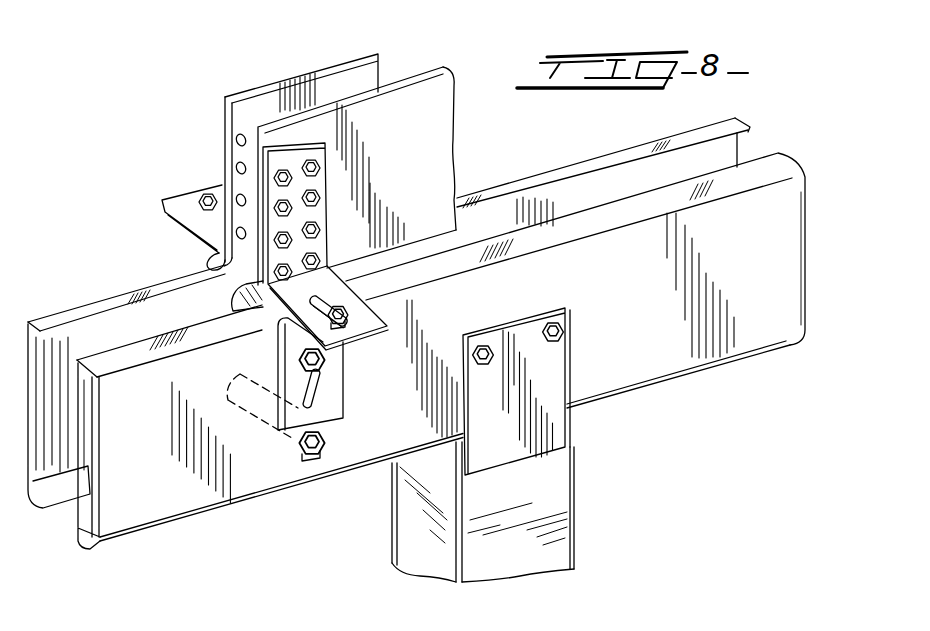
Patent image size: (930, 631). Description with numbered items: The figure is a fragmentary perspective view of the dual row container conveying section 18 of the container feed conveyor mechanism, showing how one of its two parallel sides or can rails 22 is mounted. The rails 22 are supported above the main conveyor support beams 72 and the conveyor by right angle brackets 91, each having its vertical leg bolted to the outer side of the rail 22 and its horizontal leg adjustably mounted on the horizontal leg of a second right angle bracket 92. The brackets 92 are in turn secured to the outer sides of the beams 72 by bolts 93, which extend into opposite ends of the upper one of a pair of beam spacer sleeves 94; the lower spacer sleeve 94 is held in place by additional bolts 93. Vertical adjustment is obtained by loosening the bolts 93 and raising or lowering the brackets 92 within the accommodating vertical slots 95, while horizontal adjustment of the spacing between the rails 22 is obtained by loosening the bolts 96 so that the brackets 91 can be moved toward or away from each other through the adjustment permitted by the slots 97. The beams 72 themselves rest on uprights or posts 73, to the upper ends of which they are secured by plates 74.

The dual row container conveying section 18 is at (162, 112).
The rail 22 is at (283, 92).
The main conveyor support beam 72 is at (72, 309).
The upright or post 73 is at (577, 525).
The plate 74 is at (570, 358).
The right angle bracket 91 is at (220, 142).
The right angle bracket 92 is at (205, 257).
The bolt 93 is at (325, 366).
The beam spacer sleeve 94 is at (236, 311).
The vertical slot 95 is at (318, 396).
The bolt 96 is at (199, 201).
The slot 97 is at (318, 300).